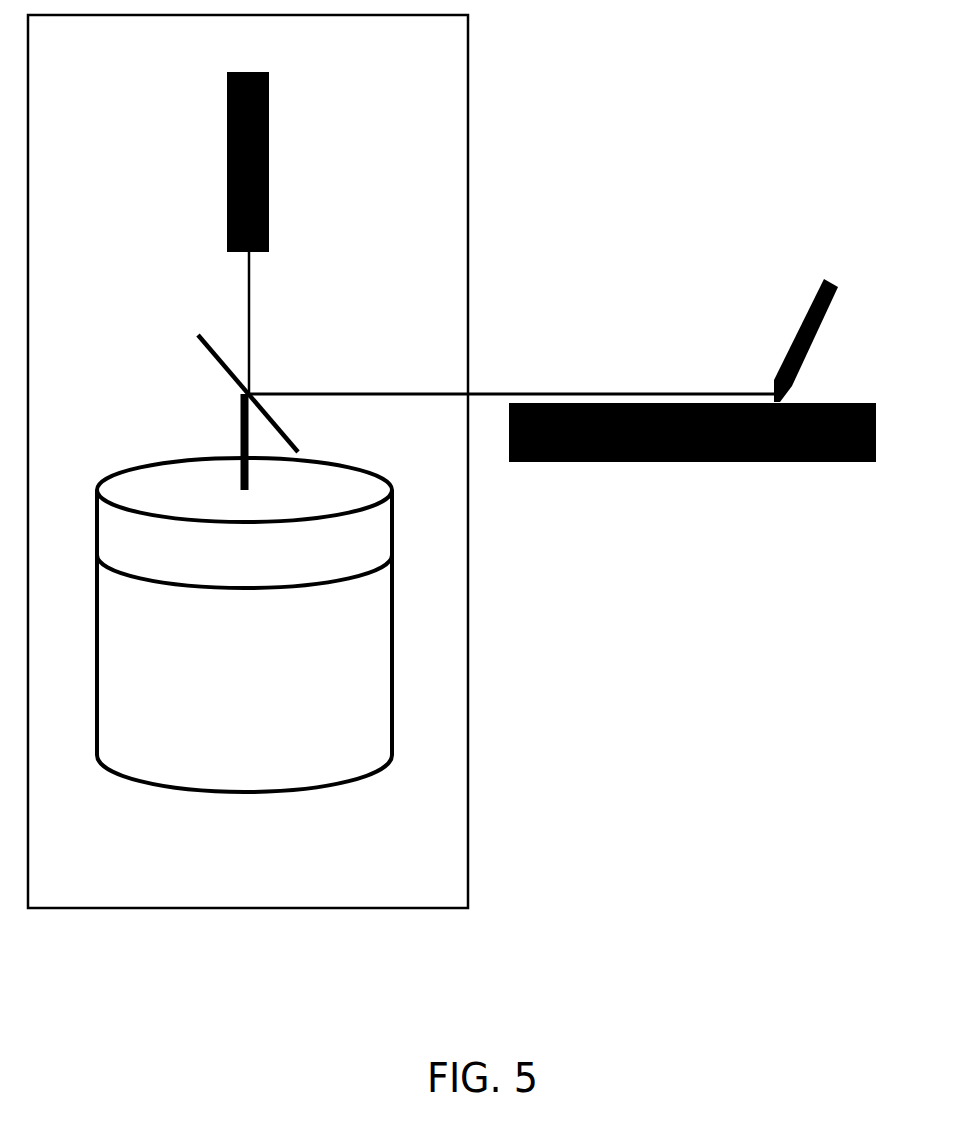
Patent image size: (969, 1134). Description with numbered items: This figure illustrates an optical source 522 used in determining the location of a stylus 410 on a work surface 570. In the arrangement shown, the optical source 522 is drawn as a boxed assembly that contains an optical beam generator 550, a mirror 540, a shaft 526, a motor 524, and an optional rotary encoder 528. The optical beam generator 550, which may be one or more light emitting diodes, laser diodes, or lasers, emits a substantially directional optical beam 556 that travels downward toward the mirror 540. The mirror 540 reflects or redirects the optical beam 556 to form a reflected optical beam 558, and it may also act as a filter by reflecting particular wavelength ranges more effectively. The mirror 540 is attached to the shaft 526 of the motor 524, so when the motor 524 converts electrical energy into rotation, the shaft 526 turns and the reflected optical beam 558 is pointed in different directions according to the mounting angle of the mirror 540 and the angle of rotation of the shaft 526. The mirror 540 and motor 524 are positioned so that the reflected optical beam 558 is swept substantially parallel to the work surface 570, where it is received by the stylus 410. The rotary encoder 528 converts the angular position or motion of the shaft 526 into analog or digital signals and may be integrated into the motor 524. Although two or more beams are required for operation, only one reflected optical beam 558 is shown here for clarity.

The stylus 410 is at (805, 307).
The optical source 522 is at (477, 660).
The motor 524 is at (198, 800).
The shaft 526 is at (235, 429).
The rotary encoder 528 is at (401, 512).
The mirror 540 is at (197, 345).
The optical beam generator 550 is at (224, 124).
The optical beam 556 is at (252, 292).
The reflected optical beam 558 is at (549, 392).
The work surface 570 is at (728, 468).